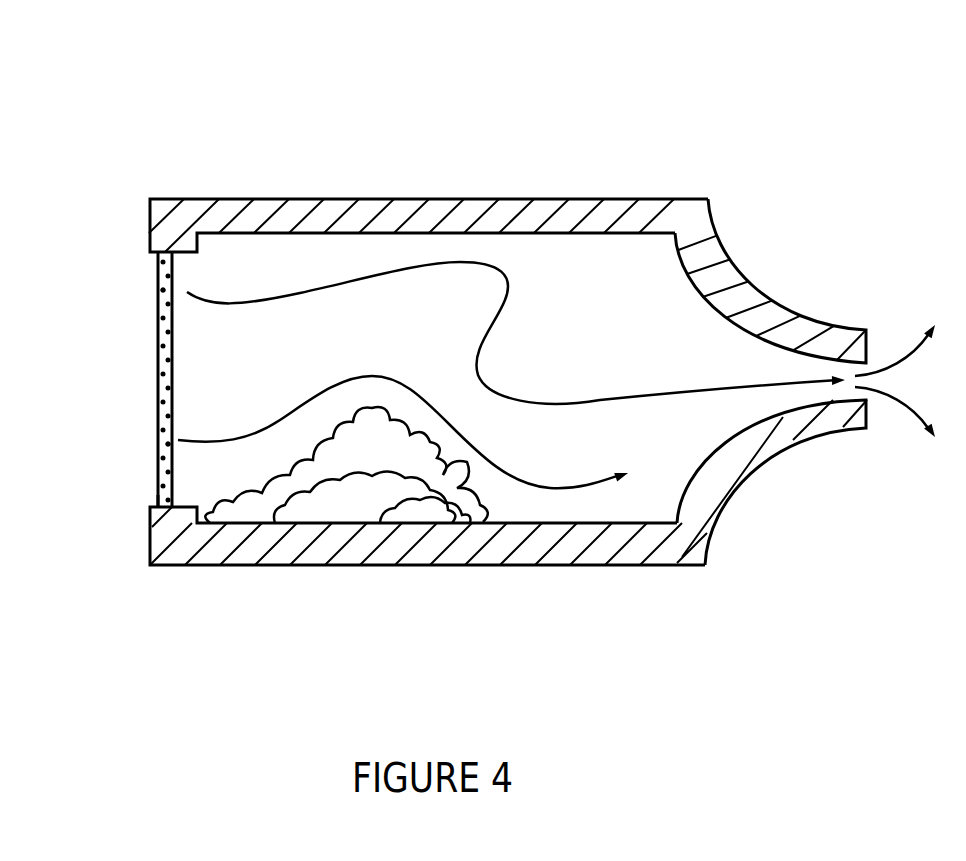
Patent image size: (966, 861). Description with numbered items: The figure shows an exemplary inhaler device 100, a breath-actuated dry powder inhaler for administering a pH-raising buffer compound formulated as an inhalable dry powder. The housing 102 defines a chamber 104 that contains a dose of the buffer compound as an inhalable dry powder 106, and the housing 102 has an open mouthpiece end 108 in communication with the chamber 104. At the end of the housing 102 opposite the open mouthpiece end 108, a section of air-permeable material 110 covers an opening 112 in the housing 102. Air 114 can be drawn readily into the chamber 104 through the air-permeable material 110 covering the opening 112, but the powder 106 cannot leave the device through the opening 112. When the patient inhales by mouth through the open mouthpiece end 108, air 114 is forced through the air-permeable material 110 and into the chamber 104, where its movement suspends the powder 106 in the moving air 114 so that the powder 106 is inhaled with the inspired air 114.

The inhaler device 100 is at (680, 42).
The housing 102 is at (540, 205).
The chamber 104 is at (645, 268).
The inhalable dry powder 106 is at (348, 485).
The open mouthpiece end 108 is at (866, 390).
The air-permeable material 110 is at (158, 363).
The opening 112 is at (107, 544).
The air 114 is at (148, 293).